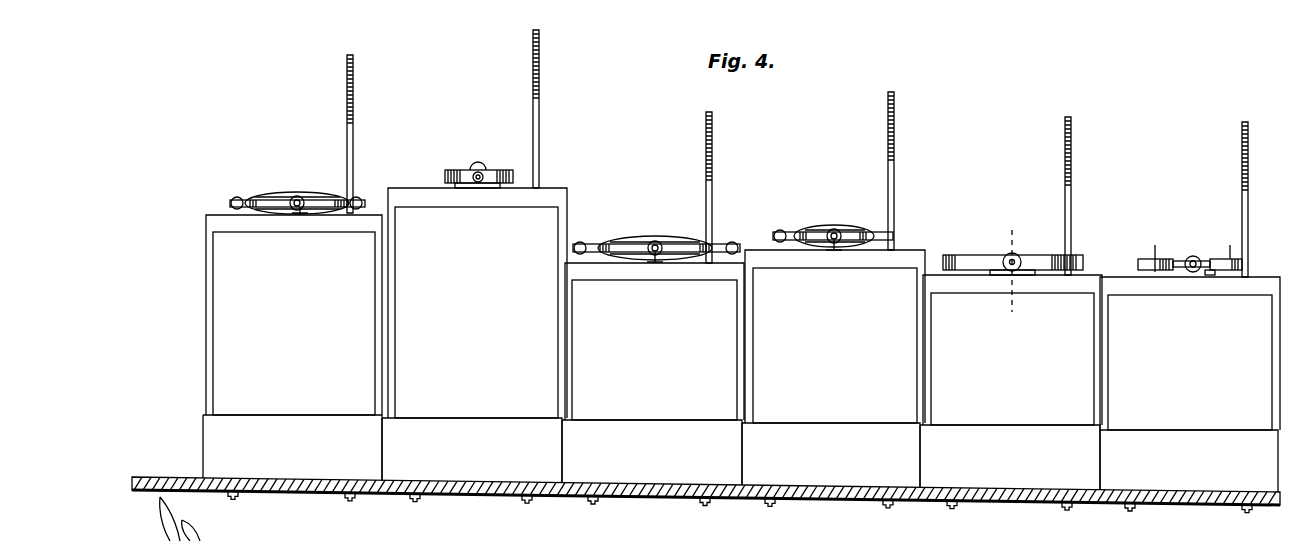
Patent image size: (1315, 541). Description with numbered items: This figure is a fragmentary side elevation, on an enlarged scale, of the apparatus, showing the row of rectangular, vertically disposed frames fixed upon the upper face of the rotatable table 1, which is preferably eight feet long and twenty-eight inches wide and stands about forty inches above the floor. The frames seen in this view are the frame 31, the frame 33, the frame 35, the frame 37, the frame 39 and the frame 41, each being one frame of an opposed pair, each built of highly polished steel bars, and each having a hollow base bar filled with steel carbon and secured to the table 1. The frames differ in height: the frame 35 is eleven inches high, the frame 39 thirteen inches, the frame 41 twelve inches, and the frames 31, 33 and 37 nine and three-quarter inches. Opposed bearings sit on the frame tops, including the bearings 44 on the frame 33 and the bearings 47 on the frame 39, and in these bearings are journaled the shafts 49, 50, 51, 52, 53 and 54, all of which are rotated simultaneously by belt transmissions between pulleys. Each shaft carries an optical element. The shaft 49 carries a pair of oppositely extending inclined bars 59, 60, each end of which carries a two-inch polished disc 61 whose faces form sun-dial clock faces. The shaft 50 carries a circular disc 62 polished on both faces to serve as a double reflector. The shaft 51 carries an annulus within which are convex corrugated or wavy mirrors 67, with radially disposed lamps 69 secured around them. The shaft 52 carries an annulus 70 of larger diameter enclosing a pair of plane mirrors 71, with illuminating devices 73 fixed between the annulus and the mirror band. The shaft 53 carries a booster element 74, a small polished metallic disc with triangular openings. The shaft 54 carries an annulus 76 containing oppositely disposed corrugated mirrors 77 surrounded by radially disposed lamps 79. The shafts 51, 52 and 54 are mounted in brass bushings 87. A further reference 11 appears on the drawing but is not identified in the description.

The rotatable table 1 is at (170, 477).
The frame 41 is at (222, 222).
The brass bushing 87 is at (346, 85).
The corrugated mirrors 77 is at (301, 200).
The annulus 76 is at (236, 200).
The illuminating elements 79 is at (358, 199).
The shaft 54 is at (300, 216).
The frame 39 is at (420, 188).
The bearings 47 is at (474, 170).
The booster element 74 is at (495, 172).
The shaft 53 is at (478, 186).
The frame 37 is at (710, 270).
The plane mirrors 71 is at (664, 246).
The illuminating devices 73 is at (582, 243).
The annulus 70 is at (733, 243).
The shaft 52 is at (655, 256).
The frame 35 is at (790, 258).
The convex corrugated mirrors 67 is at (842, 232).
The illuminating devices 69 is at (783, 231).
The shaft 51 is at (835, 246).
The frame 33 is at (1075, 285).
The circular disc 62 is at (968, 262).
The bearings 44 is at (1017, 254).
The shaft 50 is at (1009, 266).
The axis 11 is at (1012, 273).
The frame 31 is at (1125, 283).
The circular disc 61 is at (1226, 258).
The inclined bar 60 is at (1180, 266).
The shaft 49 is at (1193, 272).
The inclined bar 59 is at (1209, 275).